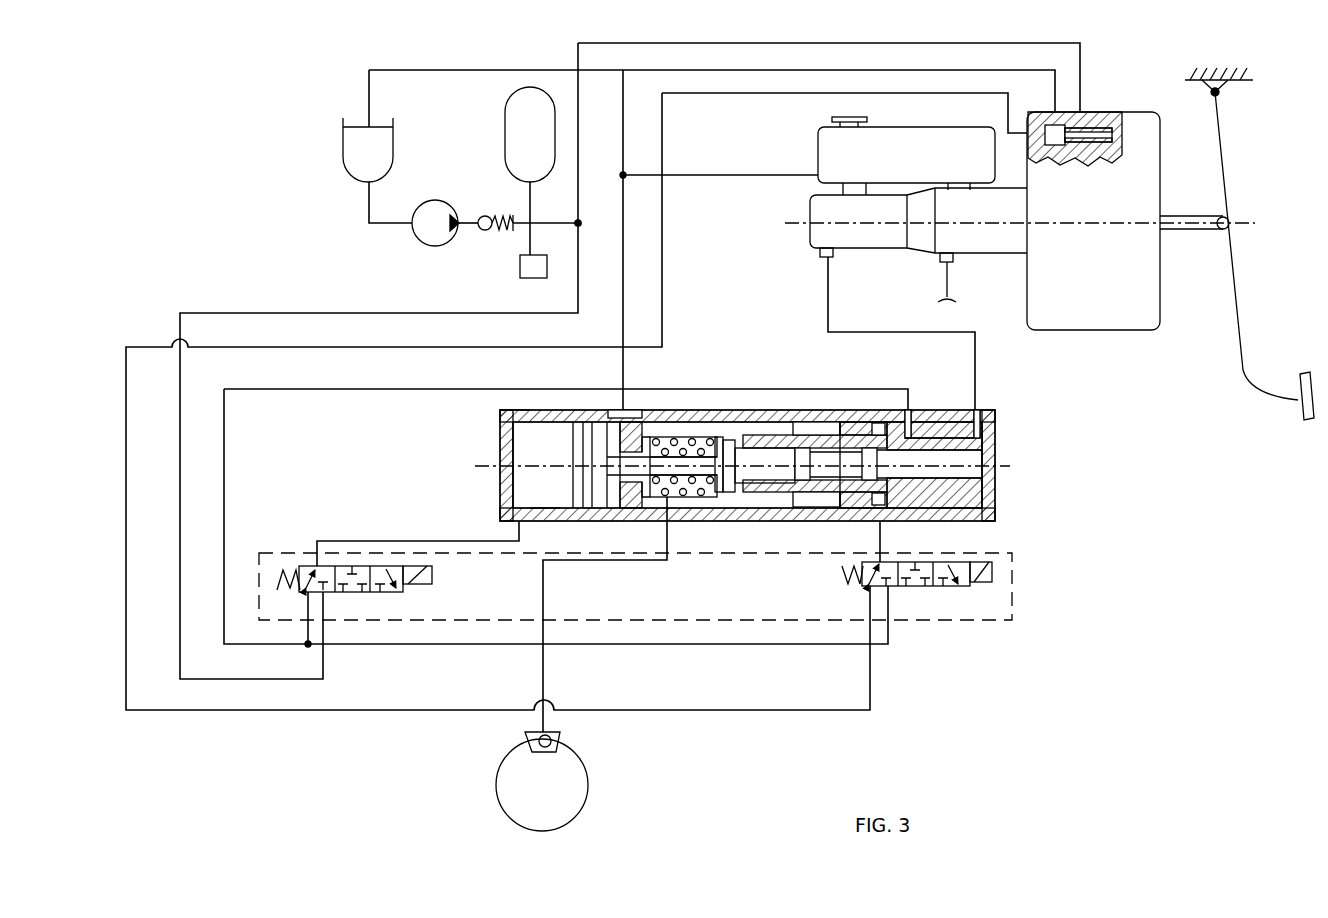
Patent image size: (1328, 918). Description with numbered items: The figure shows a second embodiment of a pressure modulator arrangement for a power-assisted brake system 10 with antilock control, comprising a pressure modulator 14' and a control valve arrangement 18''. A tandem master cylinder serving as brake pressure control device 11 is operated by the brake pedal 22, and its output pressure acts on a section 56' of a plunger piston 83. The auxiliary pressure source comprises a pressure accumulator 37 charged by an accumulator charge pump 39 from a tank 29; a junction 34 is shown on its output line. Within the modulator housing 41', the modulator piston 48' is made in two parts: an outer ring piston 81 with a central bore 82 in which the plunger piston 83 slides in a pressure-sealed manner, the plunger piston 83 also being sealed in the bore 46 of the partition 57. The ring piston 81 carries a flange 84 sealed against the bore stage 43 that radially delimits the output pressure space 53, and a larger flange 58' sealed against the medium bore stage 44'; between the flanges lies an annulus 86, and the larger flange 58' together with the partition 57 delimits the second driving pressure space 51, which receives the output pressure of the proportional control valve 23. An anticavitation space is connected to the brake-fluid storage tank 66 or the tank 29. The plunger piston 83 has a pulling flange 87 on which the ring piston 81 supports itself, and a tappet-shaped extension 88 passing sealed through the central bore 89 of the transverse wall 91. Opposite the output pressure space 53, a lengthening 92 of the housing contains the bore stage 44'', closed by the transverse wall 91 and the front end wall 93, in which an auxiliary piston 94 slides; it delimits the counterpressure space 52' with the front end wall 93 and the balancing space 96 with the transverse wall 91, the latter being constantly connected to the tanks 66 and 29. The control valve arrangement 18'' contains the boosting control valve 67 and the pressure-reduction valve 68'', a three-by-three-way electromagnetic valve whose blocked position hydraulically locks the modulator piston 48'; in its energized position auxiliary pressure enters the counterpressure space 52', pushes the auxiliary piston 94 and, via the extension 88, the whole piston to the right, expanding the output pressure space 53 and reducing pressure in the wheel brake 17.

The brake system 10 is at (1227, 157).
The brake pressure control device 11 is at (963, 258).
The pressure modulator 14' is at (725, 468).
The wheel brake 17 is at (557, 737).
The control valve arrangement 18'' is at (656, 591).
The brake pedal 22 is at (1242, 297).
The proportional control valve 23 is at (1093, 110).
The tank 29 is at (387, 137).
The pressure line junction 34 is at (597, 214).
The pressure accumulator 37 is at (505, 137).
The accumulator charge pump 39 is at (418, 232).
The modulator housing 41' is at (962, 530).
The bore stage 43 is at (680, 437).
The medium bore stage 44' is at (816, 522).
The bore stage 44'' is at (549, 529).
The bore 46 is at (945, 462).
The modulator piston 48' is at (813, 407).
The second driving pressure space 51 is at (880, 427).
The counterpressure space 52' is at (518, 465).
The output pressure space 53 is at (703, 448).
The section 56' is at (980, 426).
The partition 57 is at (907, 495).
The flange 58' is at (863, 401).
The brake-fluid storage tank 66 is at (932, 137).
The boosting control valve 67 is at (968, 588).
The pressure-reduction valve 68'' is at (370, 590).
The ring piston 81 is at (843, 428).
The central bore 82 is at (800, 440).
The plunger piston 83 is at (752, 472).
The flange 84 is at (785, 490).
The annulus 86 is at (840, 505).
The pulling flange 87 is at (735, 495).
The tappet-shaped extension 88 is at (668, 495).
The central bore 89 is at (635, 485).
The transverse wall 91 is at (611, 510).
The lengthening 92 is at (508, 411).
The front end wall 93 is at (505, 442).
The auxiliary piston 94 is at (578, 505).
The balancing space 96 is at (597, 432).